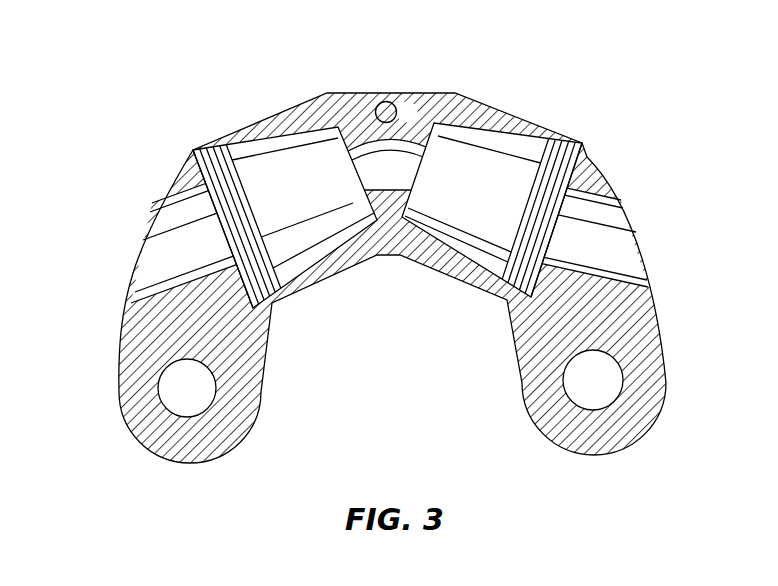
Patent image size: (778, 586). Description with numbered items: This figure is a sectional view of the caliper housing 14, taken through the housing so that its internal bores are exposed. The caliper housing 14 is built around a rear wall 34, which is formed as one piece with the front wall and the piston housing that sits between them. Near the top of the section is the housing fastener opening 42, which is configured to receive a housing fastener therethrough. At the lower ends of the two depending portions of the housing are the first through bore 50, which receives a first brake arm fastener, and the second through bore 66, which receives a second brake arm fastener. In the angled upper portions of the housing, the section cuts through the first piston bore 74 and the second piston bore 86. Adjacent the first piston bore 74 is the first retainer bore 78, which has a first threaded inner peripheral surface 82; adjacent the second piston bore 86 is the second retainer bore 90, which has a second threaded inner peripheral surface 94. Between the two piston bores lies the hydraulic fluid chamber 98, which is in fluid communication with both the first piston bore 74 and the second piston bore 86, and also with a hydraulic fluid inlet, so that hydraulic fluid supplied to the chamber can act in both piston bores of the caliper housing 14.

The caliper housing 14 is at (225, 75).
The rear wall 34 is at (665, 378).
The housing fastener opening 42 is at (386, 108).
The first through bore 50 is at (593, 388).
The second through bore 66 is at (185, 388).
The first piston bore 74 is at (493, 207).
The first retainer bore 78 is at (545, 220).
The first threaded inner peripheral surface 82 is at (566, 183).
The second piston bore 86 is at (319, 208).
The second retainer bore 90 is at (237, 218).
The second threaded inner peripheral surface 94 is at (207, 194).
The hydraulic fluid chamber 98 is at (375, 165).